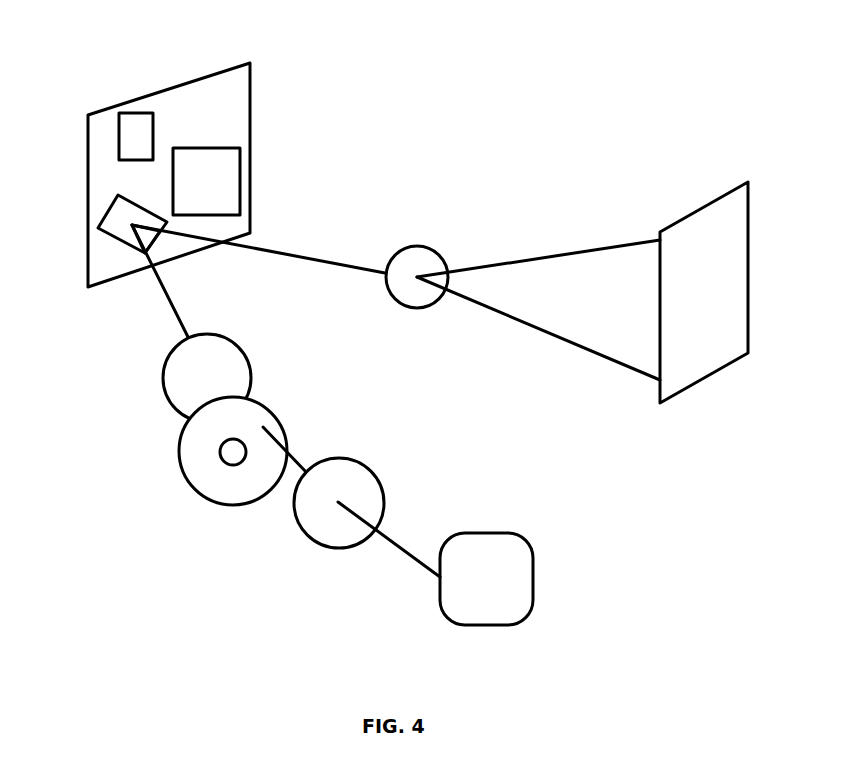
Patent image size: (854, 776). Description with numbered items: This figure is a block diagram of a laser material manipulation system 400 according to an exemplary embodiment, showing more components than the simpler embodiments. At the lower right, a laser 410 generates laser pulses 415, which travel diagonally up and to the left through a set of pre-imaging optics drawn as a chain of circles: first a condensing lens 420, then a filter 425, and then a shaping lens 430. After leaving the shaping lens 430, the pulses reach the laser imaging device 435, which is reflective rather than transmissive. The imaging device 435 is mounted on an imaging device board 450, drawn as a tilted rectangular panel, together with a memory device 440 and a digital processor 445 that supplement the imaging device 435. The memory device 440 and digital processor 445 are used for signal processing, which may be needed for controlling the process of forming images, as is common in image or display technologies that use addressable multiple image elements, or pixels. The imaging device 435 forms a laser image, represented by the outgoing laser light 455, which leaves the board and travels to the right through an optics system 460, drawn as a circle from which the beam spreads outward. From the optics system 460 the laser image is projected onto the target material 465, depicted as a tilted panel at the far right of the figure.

The laser material manipulation system 400 is at (526, 124).
The laser 410 is at (488, 530).
The laser pulses 415 is at (397, 542).
The condensing lens 420 is at (355, 460).
The filter 425 is at (275, 415).
The shaping lens 430 is at (243, 347).
The laser imaging device 435 is at (120, 220).
The memory device 440 is at (223, 182).
The digital processor 445 is at (138, 135).
The imaging device board 450 is at (232, 122).
The outgoing laser light 455 is at (303, 252).
The optics system 460 is at (418, 243).
The target material 465 is at (738, 228).